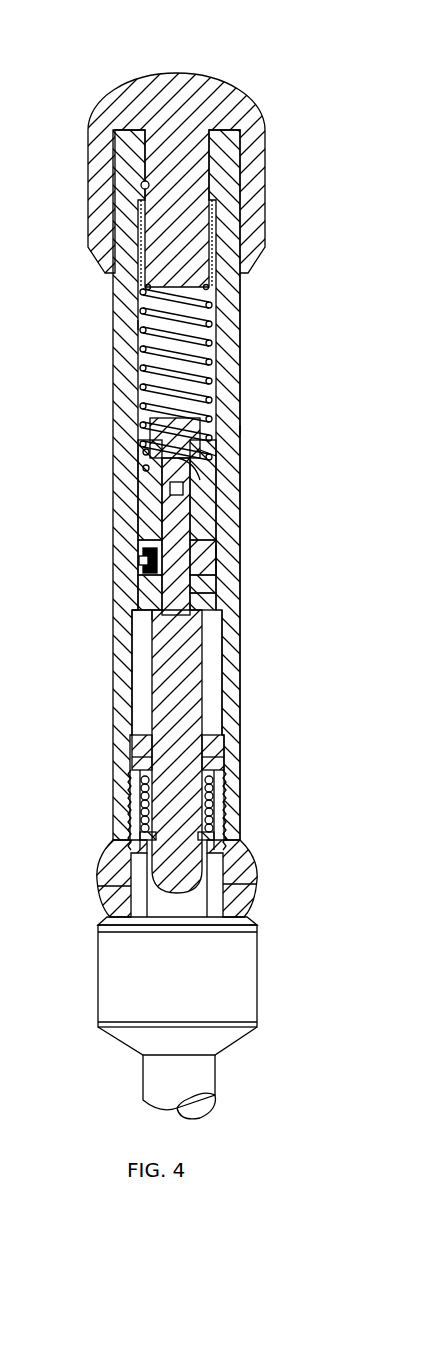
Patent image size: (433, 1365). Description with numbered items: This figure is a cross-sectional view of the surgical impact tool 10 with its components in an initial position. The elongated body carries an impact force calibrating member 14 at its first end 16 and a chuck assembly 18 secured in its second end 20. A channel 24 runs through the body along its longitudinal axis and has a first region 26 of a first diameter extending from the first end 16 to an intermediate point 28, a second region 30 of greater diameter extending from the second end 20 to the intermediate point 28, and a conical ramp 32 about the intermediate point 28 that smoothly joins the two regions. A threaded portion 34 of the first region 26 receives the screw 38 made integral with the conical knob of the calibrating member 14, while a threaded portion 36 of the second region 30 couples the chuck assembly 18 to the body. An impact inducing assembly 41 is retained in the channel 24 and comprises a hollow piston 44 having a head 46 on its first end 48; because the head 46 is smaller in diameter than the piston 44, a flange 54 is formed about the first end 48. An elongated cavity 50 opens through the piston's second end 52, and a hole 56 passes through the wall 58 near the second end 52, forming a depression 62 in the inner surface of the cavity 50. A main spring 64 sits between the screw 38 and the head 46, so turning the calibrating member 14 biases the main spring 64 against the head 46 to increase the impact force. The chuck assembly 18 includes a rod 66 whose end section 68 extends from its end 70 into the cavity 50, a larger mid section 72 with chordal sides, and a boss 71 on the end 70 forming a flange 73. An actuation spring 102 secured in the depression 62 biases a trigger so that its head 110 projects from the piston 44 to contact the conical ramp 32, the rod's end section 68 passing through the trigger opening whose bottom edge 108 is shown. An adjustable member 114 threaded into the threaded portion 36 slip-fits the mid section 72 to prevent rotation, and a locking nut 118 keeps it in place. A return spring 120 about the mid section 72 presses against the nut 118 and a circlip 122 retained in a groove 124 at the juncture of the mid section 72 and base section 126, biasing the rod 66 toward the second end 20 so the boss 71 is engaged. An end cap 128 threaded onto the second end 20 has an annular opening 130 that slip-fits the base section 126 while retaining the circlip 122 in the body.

The impact tool 10 is at (294, 358).
The impact force calibrating member 14 is at (112, 103).
The first end 16 is at (245, 140).
The chuck assembly 18 is at (262, 962).
The second end 20 is at (98, 866).
The channel 24 is at (128, 375).
The first region 26 is at (215, 305).
The intermediate point 28 is at (214, 560).
The second region 30 is at (220, 672).
The conical ramp 32 is at (143, 575).
The threaded portion 34 is at (140, 183).
The threaded portion 36 is at (225, 800).
The screw 38 is at (212, 200).
The impact inducing assembly 41 is at (212, 348).
The hollow piston 44 is at (208, 456).
The head 46 is at (143, 432).
The first end 48 is at (148, 455).
The elongated cavity 50 is at (158, 470).
The second end 52 is at (150, 615).
The flange 54 is at (203, 440).
The hole 56 is at (206, 577).
The wall 58 is at (210, 600).
The depression 62 is at (150, 510).
The main spring 64 is at (140, 325).
The rod 66 is at (140, 665).
The end section 68 is at (205, 540).
The end 70 is at (188, 518).
The boss 71 is at (240, 430).
The mid section 72 is at (158, 690).
The flange 73 is at (183, 488).
The actuation spring 102 is at (146, 555).
The bottom edge 108 is at (150, 592).
The head 110 is at (205, 557).
The adjustable member 114 is at (225, 740).
The locking nut 118 is at (228, 760).
The return spring 120 is at (140, 790).
The circlip 122 is at (212, 838).
The groove 124 is at (125, 850).
The base section 126 is at (230, 862).
The end cap 128 is at (250, 900).
The annular opening 130 is at (125, 905).